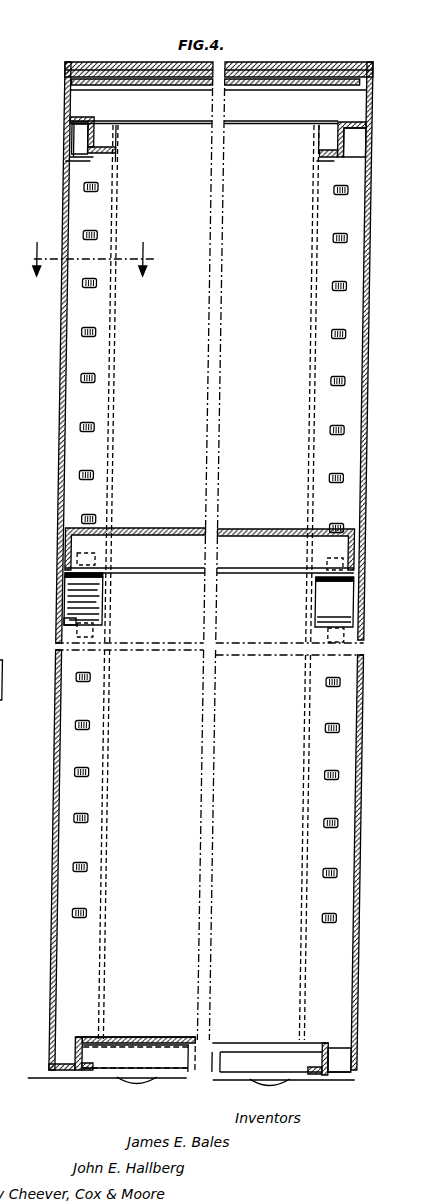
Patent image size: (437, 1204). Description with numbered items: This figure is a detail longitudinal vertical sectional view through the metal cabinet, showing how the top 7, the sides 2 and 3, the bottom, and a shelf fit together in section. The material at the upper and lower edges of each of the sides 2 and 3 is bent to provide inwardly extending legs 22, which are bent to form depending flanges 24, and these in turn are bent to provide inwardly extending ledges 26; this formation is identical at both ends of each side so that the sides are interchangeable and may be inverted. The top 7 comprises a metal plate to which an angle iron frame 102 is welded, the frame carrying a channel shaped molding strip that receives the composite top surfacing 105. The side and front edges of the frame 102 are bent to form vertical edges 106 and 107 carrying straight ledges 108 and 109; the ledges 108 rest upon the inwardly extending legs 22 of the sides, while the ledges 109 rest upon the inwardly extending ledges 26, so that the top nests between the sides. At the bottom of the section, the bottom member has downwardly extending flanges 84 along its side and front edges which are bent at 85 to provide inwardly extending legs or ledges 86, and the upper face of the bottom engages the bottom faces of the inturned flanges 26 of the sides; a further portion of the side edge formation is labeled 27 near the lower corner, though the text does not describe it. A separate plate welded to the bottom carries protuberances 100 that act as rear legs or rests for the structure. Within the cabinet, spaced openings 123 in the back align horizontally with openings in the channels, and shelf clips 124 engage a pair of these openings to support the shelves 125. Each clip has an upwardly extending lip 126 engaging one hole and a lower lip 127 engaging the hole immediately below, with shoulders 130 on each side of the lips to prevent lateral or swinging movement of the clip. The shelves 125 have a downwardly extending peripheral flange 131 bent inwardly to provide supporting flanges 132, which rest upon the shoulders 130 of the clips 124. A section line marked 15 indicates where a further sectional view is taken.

The side 2 is at (372, 393).
The side 3 is at (66, 370).
The top 7 is at (338, 72).
The section line 15 is at (94, 259).
The inwardly extending legs 22 is at (93, 137).
The depending flanges 24 is at (92, 142).
The inwardly extending ledges 26 is at (102, 155).
The bottom wall portion 27 is at (90, 1052).
The downwardly extending flanges 84 is at (124, 1052).
The bend 85 is at (99, 1068).
The inwardly extending legs or ledges 86 is at (107, 1070).
The protuberances 100 is at (154, 1080).
The angle iron frame 102 is at (106, 80).
The composite top surfacing 105 is at (108, 70).
The vertical edge 106 is at (72, 100).
The vertical edge 107 is at (96, 132).
The straight ledges 108 is at (100, 117).
The straight ledges 109 is at (117, 151).
The spaced openings 123 is at (86, 427).
The shelf clips 124 is at (111, 600).
The shelves 125 is at (160, 534).
The upwardly extending lip 126 is at (103, 556).
The lower lip 127 is at (102, 632).
The shoulders 130 is at (111, 580).
The downwardly extending peripheral flange 131 is at (292, 560).
The supporting flanges 132 is at (241, 576).